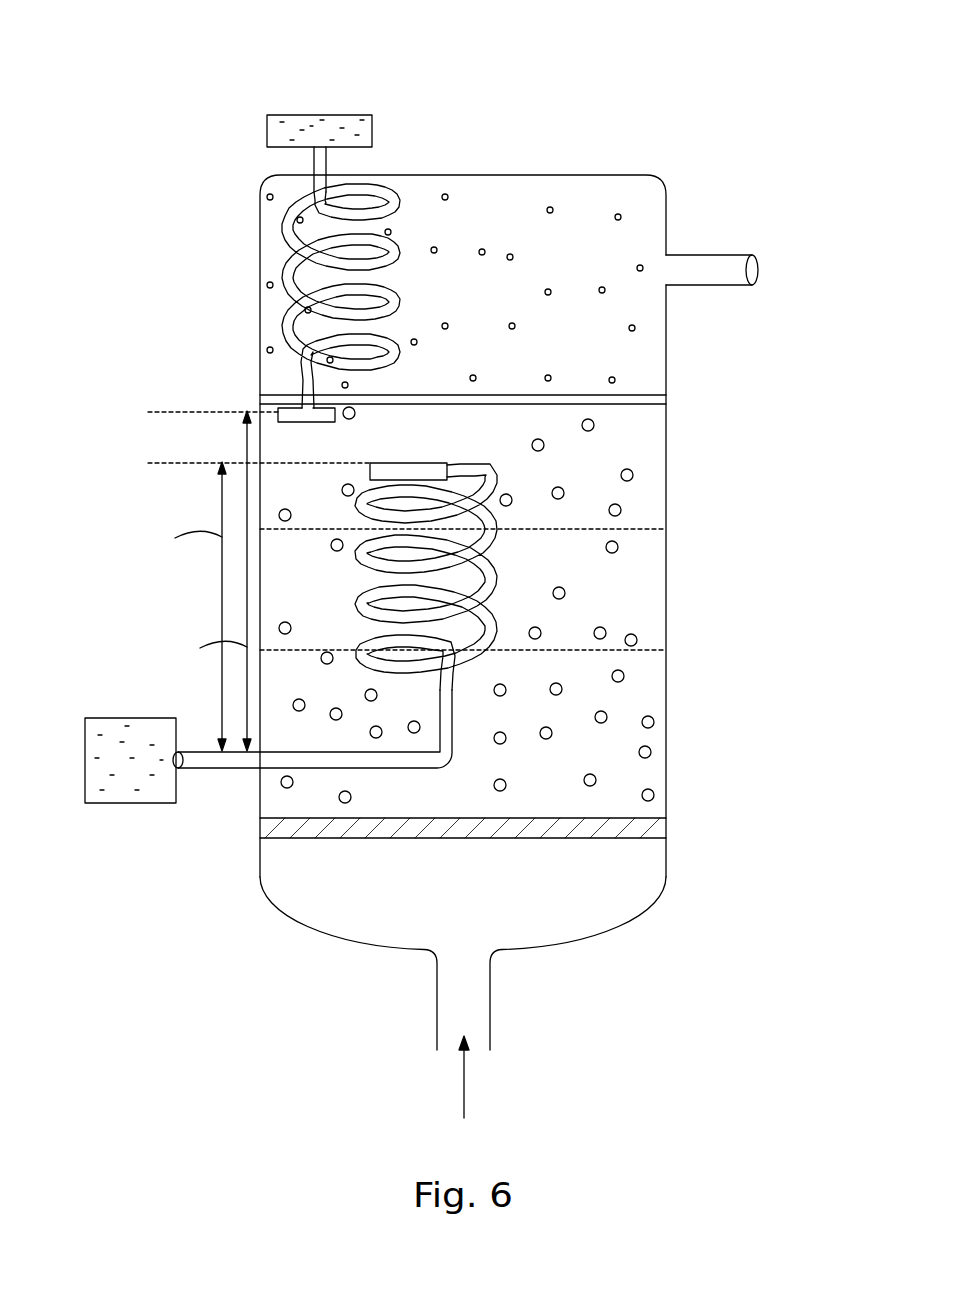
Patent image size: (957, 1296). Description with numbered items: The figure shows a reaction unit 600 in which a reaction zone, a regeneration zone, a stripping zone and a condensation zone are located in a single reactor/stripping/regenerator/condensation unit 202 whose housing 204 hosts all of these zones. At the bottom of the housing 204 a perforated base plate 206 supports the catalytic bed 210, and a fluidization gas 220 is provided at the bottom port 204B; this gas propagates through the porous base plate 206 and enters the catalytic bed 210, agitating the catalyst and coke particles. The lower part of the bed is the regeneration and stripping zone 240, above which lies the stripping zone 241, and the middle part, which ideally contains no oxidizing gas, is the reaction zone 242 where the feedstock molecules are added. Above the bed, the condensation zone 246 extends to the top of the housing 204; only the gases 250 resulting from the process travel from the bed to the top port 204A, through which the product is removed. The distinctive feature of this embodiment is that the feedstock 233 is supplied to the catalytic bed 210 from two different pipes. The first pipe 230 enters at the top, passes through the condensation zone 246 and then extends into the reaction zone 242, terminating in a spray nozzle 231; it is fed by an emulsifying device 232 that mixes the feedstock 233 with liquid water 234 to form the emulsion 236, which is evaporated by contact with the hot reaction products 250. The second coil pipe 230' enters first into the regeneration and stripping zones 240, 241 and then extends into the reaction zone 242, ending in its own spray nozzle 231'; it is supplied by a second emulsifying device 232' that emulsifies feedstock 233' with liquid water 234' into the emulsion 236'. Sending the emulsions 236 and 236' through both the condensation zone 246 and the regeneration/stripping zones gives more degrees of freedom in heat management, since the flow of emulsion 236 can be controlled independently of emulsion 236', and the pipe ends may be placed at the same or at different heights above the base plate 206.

The reaction unit 600 is at (172, 62).
The reactor/stripping/regenerator/condensation unit 202 is at (250, 290).
The housing 204 is at (258, 405).
The top port 204A is at (716, 255).
The bottom port 204B is at (490, 1005).
The perforated base plate 206 is at (282, 828).
The catalytic bed 210 is at (640, 603).
The fluidization gas 220 is at (466, 1088).
The first feeding pipe 230 is at (392, 296).
The second coil pipe 230' is at (433, 577).
The spray nozzle 231 is at (336, 434).
The spray nozzle 231' is at (438, 449).
The emulsifying device 232 is at (382, 165).
The emulsifying device 232' is at (301, 767).
The feedstock 233 is at (322, 120).
The feedstock 233' is at (90, 745).
The liquid water 234 is at (282, 117).
The liquid water 234' is at (84, 789).
The emulsion 236 is at (389, 296).
The emulsion 236' is at (382, 577).
The regeneration and stripping zone 240 is at (625, 727).
The stripping zone 241 is at (622, 565).
The reaction zone 242 is at (608, 454).
The condensation zone 246 is at (630, 366).
The gases 250 is at (548, 289).